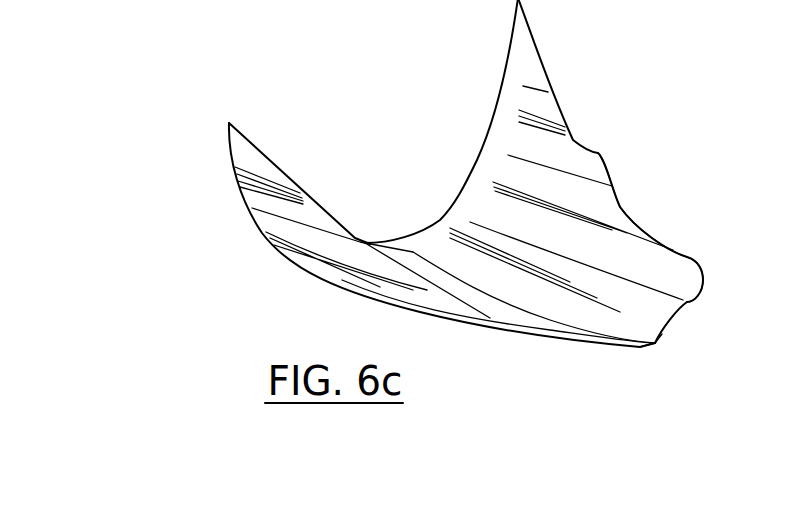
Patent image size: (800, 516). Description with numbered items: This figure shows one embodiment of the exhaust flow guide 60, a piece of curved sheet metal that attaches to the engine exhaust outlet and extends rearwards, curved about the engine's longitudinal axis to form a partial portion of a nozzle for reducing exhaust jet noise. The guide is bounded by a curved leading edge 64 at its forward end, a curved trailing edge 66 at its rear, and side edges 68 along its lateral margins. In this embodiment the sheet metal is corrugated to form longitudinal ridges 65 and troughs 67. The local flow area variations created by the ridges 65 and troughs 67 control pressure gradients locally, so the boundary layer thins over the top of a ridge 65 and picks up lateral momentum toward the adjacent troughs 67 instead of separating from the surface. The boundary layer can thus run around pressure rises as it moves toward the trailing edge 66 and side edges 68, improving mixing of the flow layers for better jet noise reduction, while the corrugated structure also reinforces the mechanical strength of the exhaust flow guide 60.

The exhaust flow guide 60 is at (567, 81).
The leading edge 64 is at (452, 203).
The longitudinal ridges 65 is at (650, 312).
The trailing edge 66 is at (657, 346).
The troughs 67 is at (660, 260).
The side edges 68 is at (272, 167).